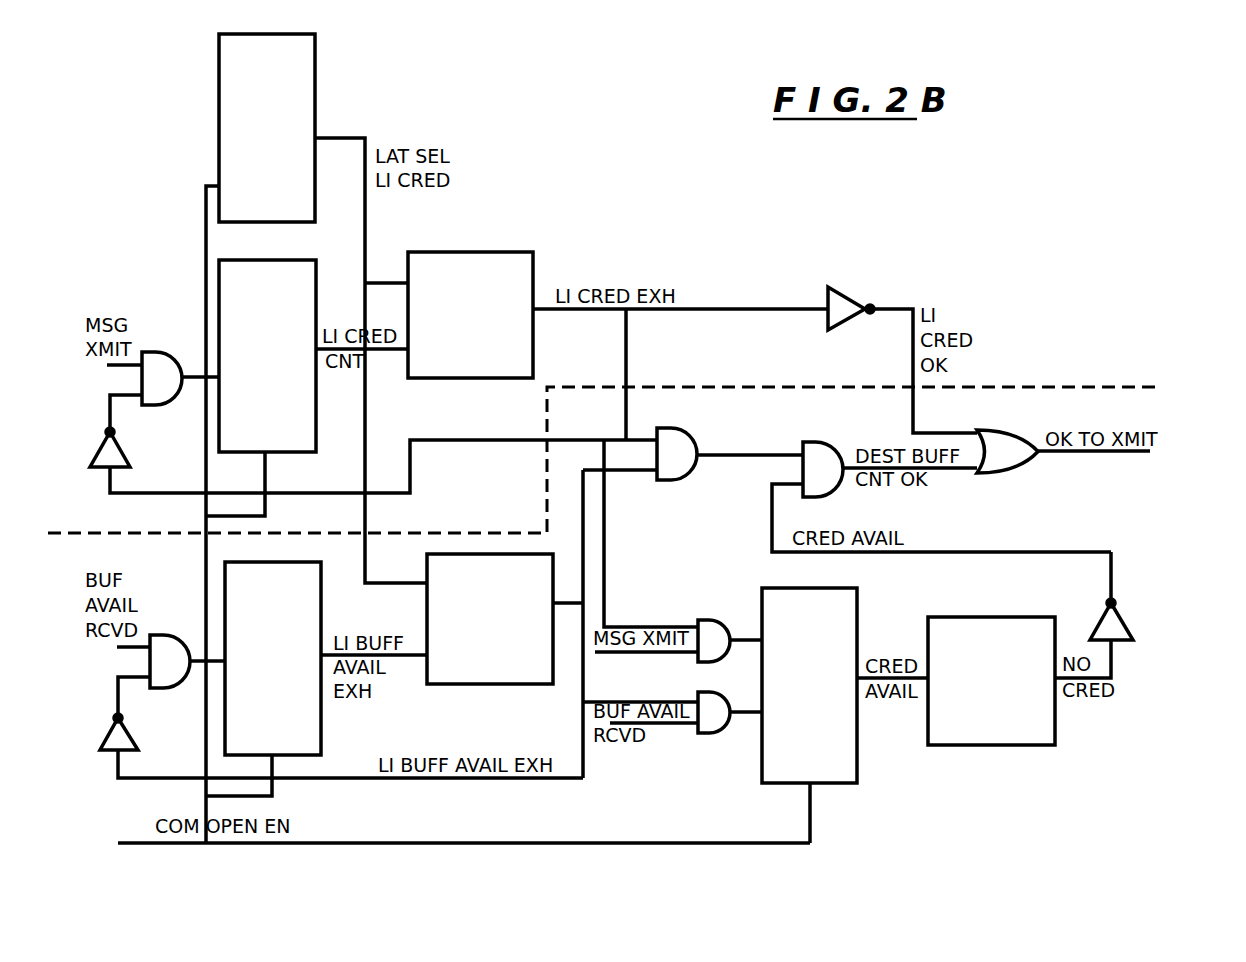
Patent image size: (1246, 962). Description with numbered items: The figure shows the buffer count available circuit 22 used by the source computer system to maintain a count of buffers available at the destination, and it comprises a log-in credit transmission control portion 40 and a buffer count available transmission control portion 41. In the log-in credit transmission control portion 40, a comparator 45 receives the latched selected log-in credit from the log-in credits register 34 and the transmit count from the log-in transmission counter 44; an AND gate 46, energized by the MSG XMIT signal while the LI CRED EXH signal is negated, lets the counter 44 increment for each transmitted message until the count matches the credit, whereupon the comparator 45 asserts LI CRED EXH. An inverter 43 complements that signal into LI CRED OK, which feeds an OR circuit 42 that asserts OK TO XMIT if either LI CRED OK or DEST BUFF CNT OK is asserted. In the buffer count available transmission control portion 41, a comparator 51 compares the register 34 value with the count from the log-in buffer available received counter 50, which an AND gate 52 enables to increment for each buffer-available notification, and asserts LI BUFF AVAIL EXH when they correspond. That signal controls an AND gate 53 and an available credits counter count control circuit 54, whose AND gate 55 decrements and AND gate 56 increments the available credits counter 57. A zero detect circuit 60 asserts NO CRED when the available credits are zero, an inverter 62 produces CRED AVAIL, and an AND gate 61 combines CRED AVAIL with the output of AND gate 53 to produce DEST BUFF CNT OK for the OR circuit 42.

The log-in credits register 34 is at (267, 128).
The log-in transmission counter 44 is at (267, 356).
The comparator 45 is at (470, 315).
The AND gate 46 is at (167, 406).
The inverter 43 is at (842, 292).
The AND gate 53 is at (676, 429).
The AND gate 61 is at (825, 442).
The OR circuit 42 is at (1003, 428).
The log-in credit transmission control portion 40 is at (445, 97).
The buffer count available circuit 22 is at (967, 203).
The log-in buffer available received counter 50 is at (273, 658).
The comparator 51 is at (490, 619).
The AND gate 52 is at (183, 688).
The AND gate 55 is at (722, 618).
The AND gate 56 is at (712, 690).
The available credits counter 57 is at (809, 685).
The zero detect circuit 60 is at (991, 681).
The inverter 62 is at (1123, 615).
The available credits counter count control circuit 54 is at (707, 752).
The buffer count available transmission control portion 41 is at (895, 812).